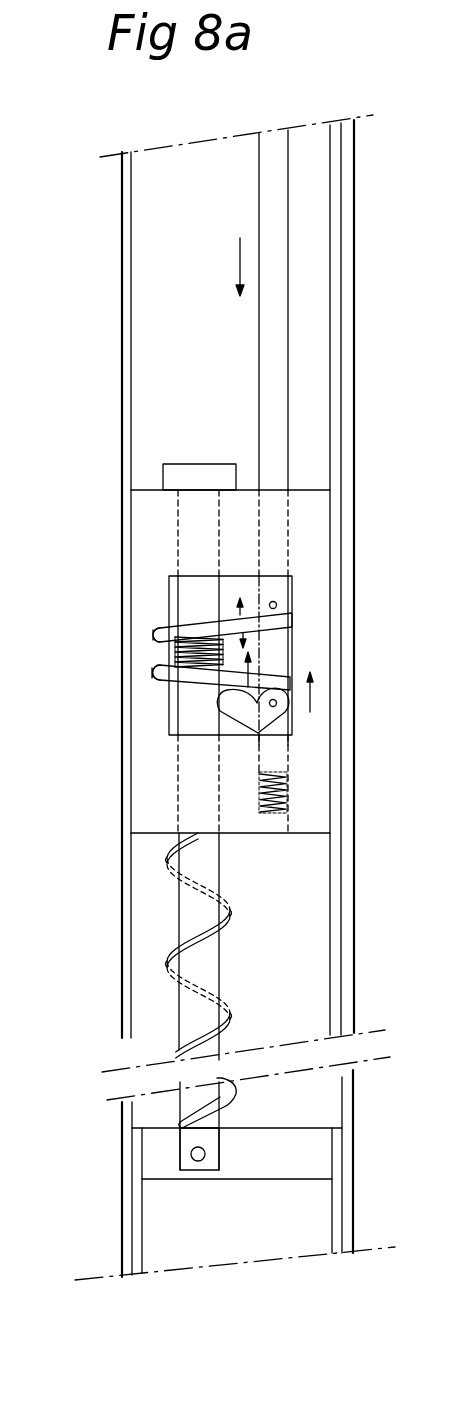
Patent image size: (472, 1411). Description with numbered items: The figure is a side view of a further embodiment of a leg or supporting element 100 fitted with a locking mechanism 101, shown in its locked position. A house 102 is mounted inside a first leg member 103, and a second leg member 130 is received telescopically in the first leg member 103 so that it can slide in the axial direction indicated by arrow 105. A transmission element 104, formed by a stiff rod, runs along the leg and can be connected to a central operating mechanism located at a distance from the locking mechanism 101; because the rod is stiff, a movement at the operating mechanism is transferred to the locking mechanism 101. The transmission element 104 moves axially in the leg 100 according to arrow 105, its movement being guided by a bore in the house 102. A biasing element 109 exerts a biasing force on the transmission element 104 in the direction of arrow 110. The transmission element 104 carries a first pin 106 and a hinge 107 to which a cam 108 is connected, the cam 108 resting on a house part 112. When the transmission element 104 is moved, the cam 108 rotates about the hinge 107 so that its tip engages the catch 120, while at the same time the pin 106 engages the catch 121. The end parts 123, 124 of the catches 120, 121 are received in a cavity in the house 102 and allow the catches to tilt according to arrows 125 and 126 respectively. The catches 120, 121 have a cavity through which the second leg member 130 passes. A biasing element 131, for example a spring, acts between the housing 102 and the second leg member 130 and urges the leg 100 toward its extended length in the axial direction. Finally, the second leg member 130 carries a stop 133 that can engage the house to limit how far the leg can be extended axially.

The leg or supporting element 100 is at (370, 300).
The locking mechanism 101 is at (302, 583).
The house 102 is at (155, 512).
The first leg member 103 is at (128, 320).
The transmission element 104 is at (280, 195).
The arrow 105 is at (242, 265).
The first pin 106 is at (277, 605).
The hinge 107 is at (280, 684).
The cam 108 is at (268, 718).
The biasing element 109 is at (284, 812).
The arrow 110 is at (313, 705).
The house part 112 is at (273, 747).
The catch 120 is at (197, 676).
The catch 121 is at (197, 628).
The end part 123 is at (160, 673).
The end part 124 is at (163, 630).
The arrow 125 is at (246, 664).
The arrow 126 is at (260, 597).
The second leg member 130 is at (207, 873).
The biasing element 131 is at (195, 943).
The stop 133 is at (197, 480).